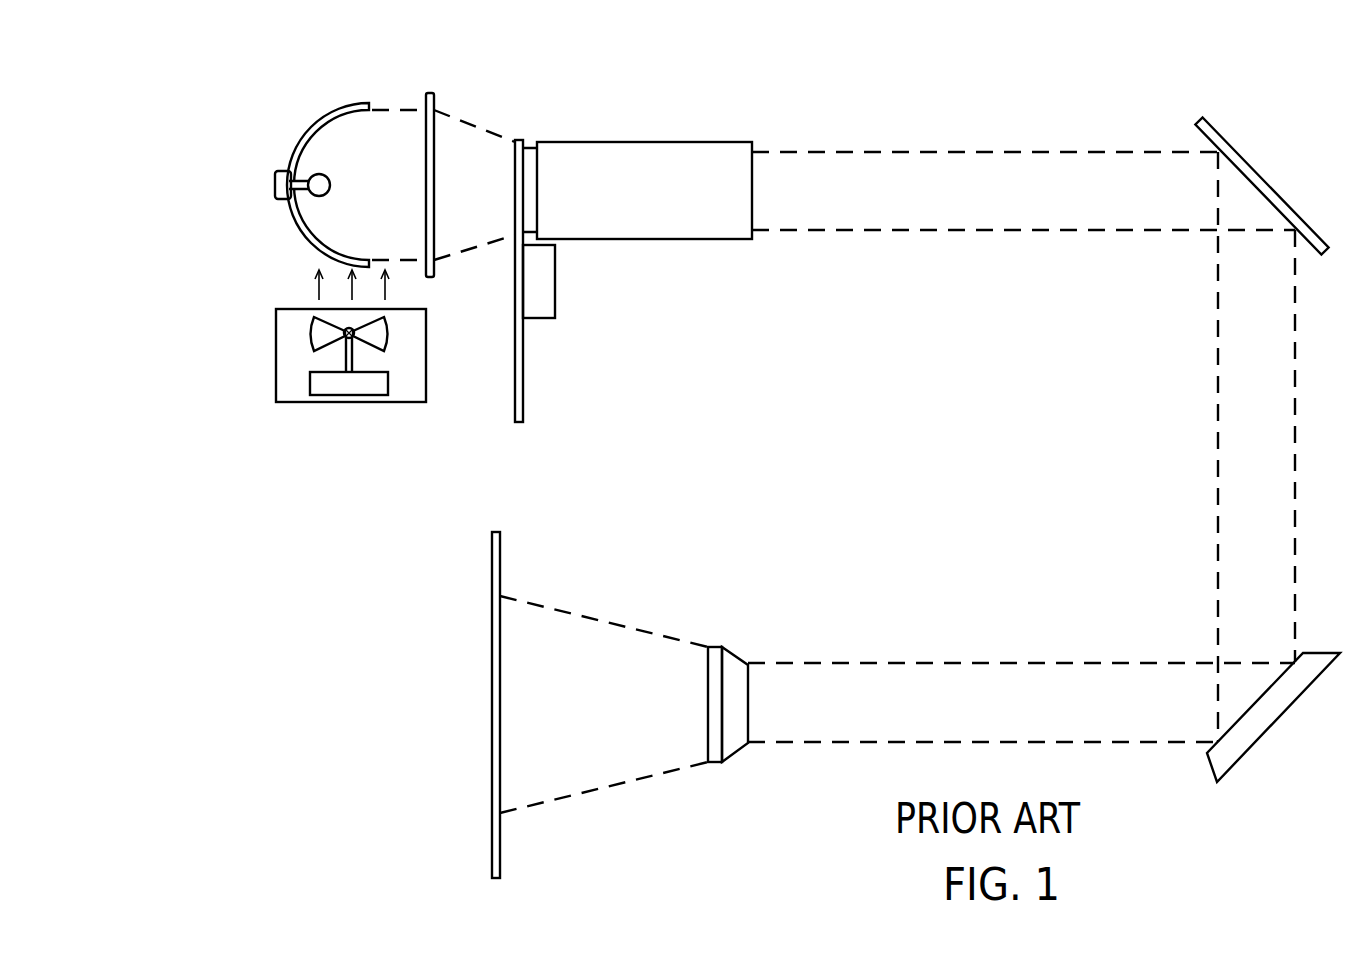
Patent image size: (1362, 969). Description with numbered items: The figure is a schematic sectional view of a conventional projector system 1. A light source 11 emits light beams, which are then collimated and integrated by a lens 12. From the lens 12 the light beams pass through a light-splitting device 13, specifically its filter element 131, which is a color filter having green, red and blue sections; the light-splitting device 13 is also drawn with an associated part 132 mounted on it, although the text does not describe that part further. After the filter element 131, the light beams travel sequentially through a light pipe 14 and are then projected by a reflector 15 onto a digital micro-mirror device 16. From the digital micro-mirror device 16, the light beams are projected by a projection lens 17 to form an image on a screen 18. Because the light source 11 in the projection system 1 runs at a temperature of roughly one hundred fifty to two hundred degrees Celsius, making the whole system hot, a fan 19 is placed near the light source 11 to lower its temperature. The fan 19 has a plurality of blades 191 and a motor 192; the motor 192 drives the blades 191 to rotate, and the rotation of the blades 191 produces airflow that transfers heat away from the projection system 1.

The projector system 1 is at (190, 88).
The light source 11 is at (340, 112).
The lens 12 is at (430, 93).
The light-splitting device 13 is at (575, 282).
The filter element 131 is at (523, 411).
The light valve 132 is at (542, 312).
The light pipe 14 is at (634, 147).
The reflector 15 is at (1255, 180).
The digital micro-mirror device 16 is at (1277, 707).
The projection lens 17 is at (733, 740).
The screen 18 is at (492, 828).
The fan 19 is at (286, 336).
The blades 191 is at (306, 338).
The motor 192 is at (306, 384).